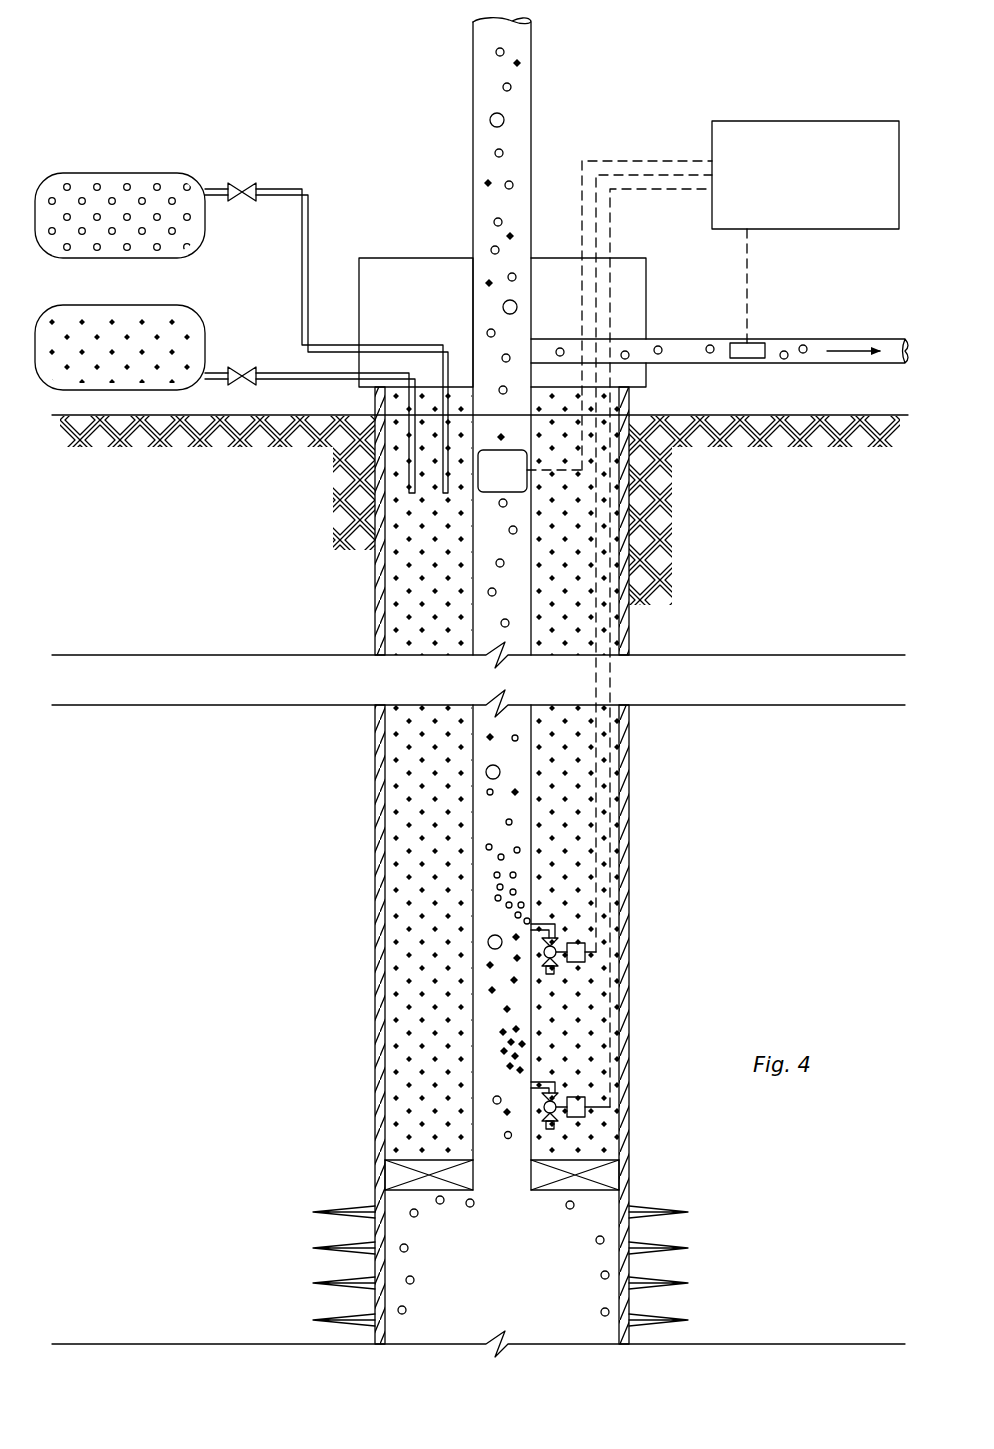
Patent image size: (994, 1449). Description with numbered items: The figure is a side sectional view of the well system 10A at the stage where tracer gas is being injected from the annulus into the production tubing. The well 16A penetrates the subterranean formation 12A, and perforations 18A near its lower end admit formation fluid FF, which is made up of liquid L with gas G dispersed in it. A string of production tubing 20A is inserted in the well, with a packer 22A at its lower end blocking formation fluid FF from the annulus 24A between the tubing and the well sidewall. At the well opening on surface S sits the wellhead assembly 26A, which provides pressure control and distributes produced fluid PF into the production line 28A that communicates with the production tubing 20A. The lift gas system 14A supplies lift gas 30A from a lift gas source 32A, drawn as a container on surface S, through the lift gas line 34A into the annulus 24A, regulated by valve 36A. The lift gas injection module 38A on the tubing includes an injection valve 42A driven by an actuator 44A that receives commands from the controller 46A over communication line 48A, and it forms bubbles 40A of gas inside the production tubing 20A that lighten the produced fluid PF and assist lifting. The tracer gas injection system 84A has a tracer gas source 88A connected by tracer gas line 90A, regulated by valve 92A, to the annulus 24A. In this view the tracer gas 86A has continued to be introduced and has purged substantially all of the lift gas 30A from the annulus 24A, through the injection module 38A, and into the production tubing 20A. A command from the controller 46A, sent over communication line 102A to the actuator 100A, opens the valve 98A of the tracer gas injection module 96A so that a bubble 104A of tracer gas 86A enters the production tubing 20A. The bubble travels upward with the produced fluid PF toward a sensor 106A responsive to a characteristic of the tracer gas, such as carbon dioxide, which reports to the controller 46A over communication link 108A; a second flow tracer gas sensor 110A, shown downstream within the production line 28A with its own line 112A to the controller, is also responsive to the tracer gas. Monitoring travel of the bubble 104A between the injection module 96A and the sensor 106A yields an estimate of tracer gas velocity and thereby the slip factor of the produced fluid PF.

The well system 10A is at (822, 27).
The subterranean formation 12A is at (808, 611).
The lift gas system 14A is at (122, 163).
The well 16A is at (380, 818).
The perforations 18A is at (330, 1243).
The production tubing 20A is at (533, 752).
The packer 22A is at (400, 1175).
The annulus 24A is at (398, 735).
The wellhead 26A is at (425, 222).
The production line 28A is at (888, 340).
The lift gas 30A is at (138, 207).
The tank outlet 32A is at (205, 228).
The lift gas line 34A is at (288, 187).
The valve 36A is at (248, 185).
The lift gas injection module 38A is at (590, 968).
The bubbles 40A is at (490, 120).
The valve 42A is at (556, 962).
The valve actuator 44A is at (585, 957).
The controller 46A is at (796, 121).
The inlet port 48A is at (600, 929).
The tracer gas injection system 84A is at (122, 295).
The tracer gas 86A is at (140, 330).
The tracer gas source 88A is at (195, 305).
The tracer gas line 90A is at (285, 381).
The valve 92A is at (245, 372).
The tracer gas injection module 96A is at (590, 1125).
The valve 98A is at (556, 1118).
The actuator 100A is at (585, 1113).
The communication line 102A is at (610, 1075).
The bubble of tracer gas 104A is at (497, 1035).
The sensor 106A is at (527, 487).
The communication link 108A is at (615, 161).
The second flow tracer gas sensor 110A is at (747, 360).
The sensor line 112A is at (748, 268).
The produced fluid PF is at (845, 350).
The surface S is at (790, 415).
The formation fluid FF is at (516, 1259).
The gas G is at (414, 1280).
The liquid L is at (560, 1293).